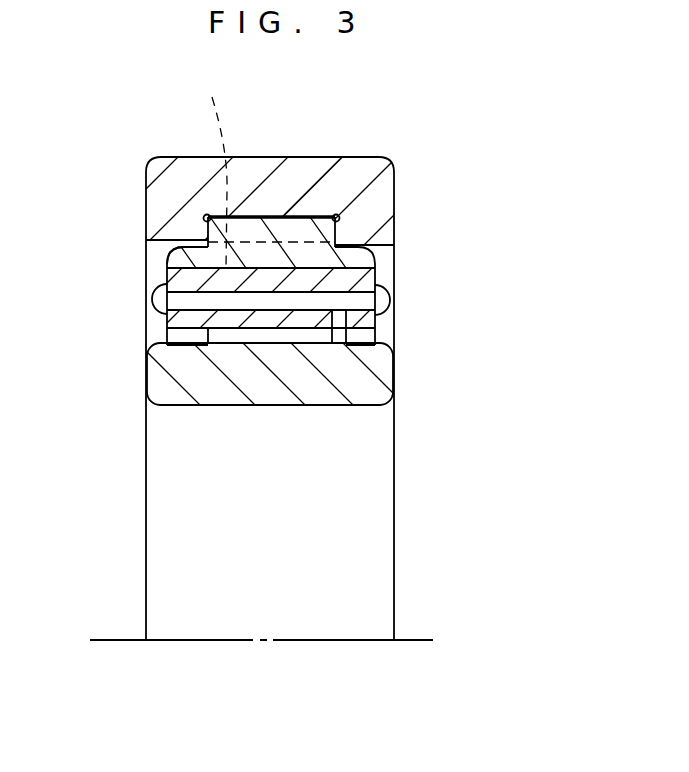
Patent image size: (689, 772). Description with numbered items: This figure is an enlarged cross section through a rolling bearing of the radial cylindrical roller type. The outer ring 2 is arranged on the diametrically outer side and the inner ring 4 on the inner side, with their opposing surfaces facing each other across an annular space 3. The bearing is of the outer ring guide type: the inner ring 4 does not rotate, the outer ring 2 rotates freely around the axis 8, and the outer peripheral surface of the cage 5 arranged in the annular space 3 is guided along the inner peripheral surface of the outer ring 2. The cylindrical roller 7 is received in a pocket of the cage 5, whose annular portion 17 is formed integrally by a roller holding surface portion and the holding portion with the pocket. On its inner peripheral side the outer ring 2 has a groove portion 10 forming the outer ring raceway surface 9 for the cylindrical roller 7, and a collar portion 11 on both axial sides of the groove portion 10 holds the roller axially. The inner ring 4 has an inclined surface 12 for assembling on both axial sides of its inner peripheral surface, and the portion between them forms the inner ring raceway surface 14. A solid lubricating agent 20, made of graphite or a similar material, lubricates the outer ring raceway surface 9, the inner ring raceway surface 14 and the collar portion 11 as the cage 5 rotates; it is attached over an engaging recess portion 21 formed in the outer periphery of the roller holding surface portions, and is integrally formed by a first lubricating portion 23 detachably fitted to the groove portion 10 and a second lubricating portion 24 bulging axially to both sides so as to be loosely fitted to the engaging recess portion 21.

The outer ring 2 is at (308, 167).
The annular space 3 is at (383, 255).
The inner ring 4 is at (394, 470).
The cage 5 is at (273, 336).
The cylindrical roller 7 is at (287, 343).
The axis 8 is at (117, 642).
The outer ring raceway surface 9 is at (257, 220).
The groove portion 10 is at (208, 169).
The collar portion 11 is at (202, 233).
The inclined surface 12 is at (162, 345).
The inner ring raceway surface 14 is at (263, 334).
The annular portion 17 is at (243, 267).
The solid lubricating agent 20 is at (253, 281).
The engaging recess portion 21 is at (167, 268).
The first lubricating portion 23 is at (318, 230).
The second lubricating portion 24 is at (183, 265).